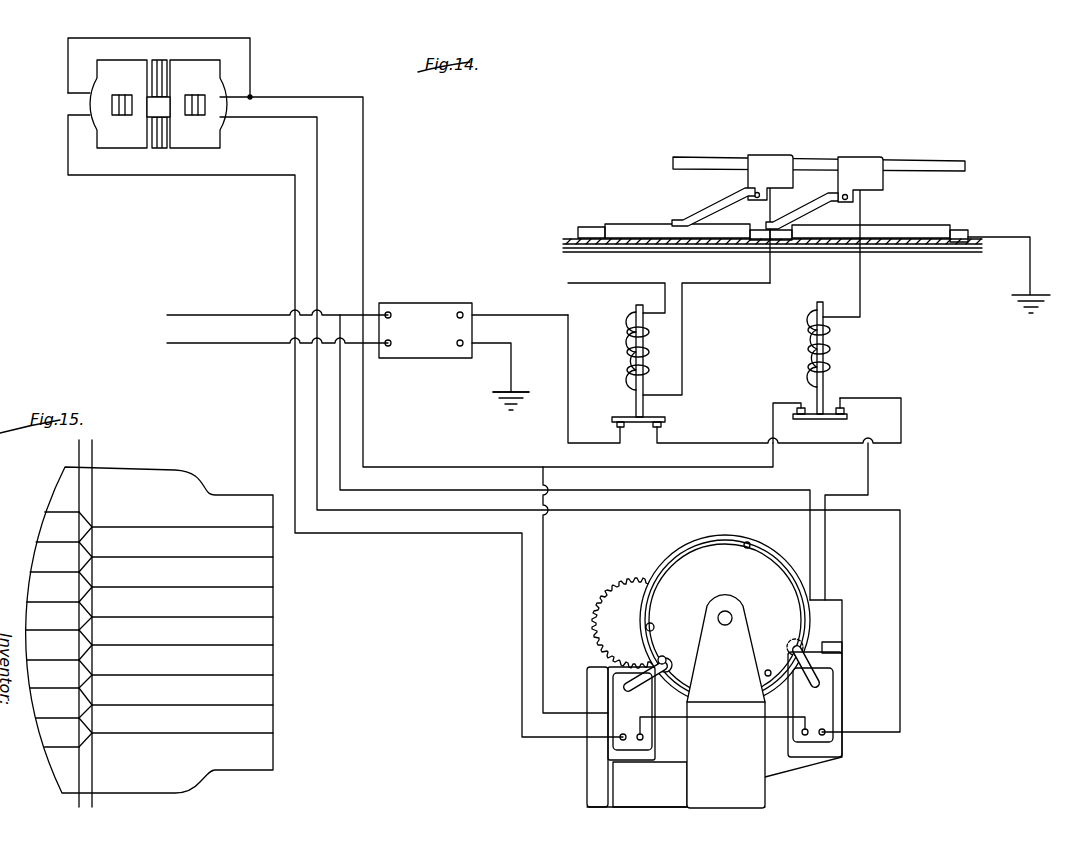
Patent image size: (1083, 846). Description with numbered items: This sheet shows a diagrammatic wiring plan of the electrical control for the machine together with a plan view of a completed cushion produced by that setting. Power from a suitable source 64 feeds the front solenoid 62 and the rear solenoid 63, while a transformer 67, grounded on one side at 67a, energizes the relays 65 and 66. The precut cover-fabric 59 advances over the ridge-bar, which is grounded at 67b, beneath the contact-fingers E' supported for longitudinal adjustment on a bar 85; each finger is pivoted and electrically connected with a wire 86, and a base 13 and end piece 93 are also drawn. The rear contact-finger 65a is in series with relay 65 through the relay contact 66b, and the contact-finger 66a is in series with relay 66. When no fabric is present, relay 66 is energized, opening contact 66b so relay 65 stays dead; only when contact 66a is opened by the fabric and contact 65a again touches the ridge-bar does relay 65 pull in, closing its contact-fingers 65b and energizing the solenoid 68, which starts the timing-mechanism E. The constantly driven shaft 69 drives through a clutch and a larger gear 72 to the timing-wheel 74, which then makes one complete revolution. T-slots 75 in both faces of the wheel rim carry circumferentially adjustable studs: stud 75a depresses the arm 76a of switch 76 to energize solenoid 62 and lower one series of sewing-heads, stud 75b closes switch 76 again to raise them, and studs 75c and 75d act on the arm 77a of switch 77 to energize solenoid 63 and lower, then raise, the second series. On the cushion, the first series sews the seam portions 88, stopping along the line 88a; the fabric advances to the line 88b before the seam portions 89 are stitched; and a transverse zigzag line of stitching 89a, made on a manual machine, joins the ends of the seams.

In FIG. 14, the front solenoid 62 is at (120, 70).
In FIG. 14, the rear solenoid 63 is at (200, 70).
In FIG. 14, the source of power 64 is at (269, 326).
In FIG. 14, the transformer 67 is at (430, 313).
In FIG. 14, the ground of transformer 67a is at (511, 385).
In FIG. 14, the ground of ridge-bar 67b is at (1030, 282).
In FIG. 14, the contact-fingers E' is at (815, 166).
In FIG. 14, the bar 85 is at (910, 163).
In FIG. 14, the contact-finger 66a is at (708, 210).
In FIG. 14, the rear contact-finger 65a is at (813, 212).
In FIG. 14, the cover-fabric 59 is at (632, 230).
In FIG. 15, the cover-fabric 59 is at (203, 481).
In FIG. 14, the wire 86 is at (862, 222).
In FIG. 14, the end contact piece 93 is at (962, 231).
In FIG. 14, the base plate 13 is at (900, 252).
In FIG. 14, the relay 66 is at (669, 350).
In FIG. 14, the relay 65 is at (838, 358).
In FIG. 14, the relay contact 66b is at (665, 422).
In FIG. 14, the contact-fingers of relay 65b is at (815, 419).
In FIG. 14, the timing-mechanism E is at (646, 544).
In FIG. 14, the timing-wheel 74 is at (702, 557).
In FIG. 14, the T-slots 75 is at (784, 557).
In FIG. 14, the stud 75a is at (657, 661).
In FIG. 14, the stud 75b is at (653, 626).
In FIG. 14, the stud 75c is at (765, 674).
In FIG. 14, the stud 75d is at (747, 549).
In FIG. 14, the larger gear 72 is at (610, 601).
In FIG. 14, the solenoid 68 is at (832, 623).
In FIG. 14, the shaft 69 is at (725, 625).
In FIG. 14, the switch 76 is at (620, 702).
In FIG. 14, the arm of switch 76a is at (653, 680).
In FIG. 14, the switch 77 is at (820, 710).
In FIG. 14, the arm of switch 77a is at (813, 679).
In FIG. 15, the line 88a is at (79, 466).
In FIG. 15, the line 88b is at (92, 466).
In FIG. 15, the seam portions 88 is at (53, 533).
In FIG. 15, the seam portions 89 is at (152, 557).
In FIG. 15, the transverse zigzag line of stitching 89a is at (83, 660).